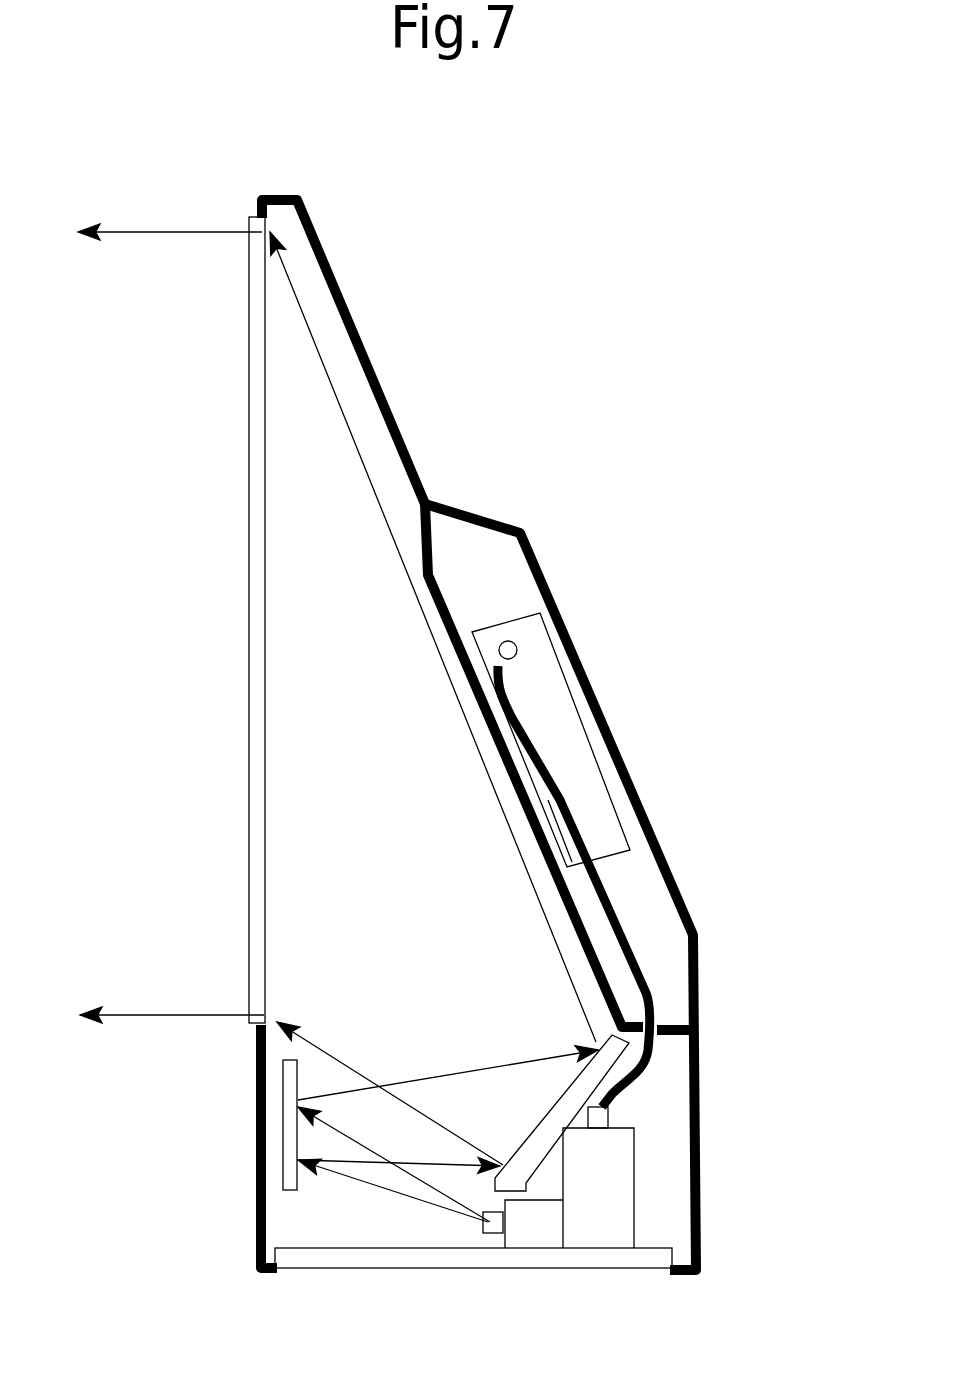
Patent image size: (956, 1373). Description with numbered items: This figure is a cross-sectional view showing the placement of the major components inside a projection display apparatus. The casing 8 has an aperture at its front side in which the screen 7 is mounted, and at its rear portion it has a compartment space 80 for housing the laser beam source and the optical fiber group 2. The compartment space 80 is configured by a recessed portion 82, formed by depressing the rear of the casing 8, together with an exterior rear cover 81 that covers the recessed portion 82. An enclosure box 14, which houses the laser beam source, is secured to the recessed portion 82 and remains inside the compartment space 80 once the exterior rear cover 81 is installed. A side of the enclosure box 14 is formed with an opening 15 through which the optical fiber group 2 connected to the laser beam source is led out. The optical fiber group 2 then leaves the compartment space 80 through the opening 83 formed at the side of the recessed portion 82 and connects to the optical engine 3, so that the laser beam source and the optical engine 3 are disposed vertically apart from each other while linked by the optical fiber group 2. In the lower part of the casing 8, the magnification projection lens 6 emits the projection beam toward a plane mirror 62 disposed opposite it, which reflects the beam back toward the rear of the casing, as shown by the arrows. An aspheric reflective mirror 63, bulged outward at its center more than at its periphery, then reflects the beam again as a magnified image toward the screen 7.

The optical fiber group 2 is at (618, 932).
The optical engine 3 is at (608, 1172).
The magnification projection lens 6 is at (498, 1230).
The screen 7 is at (258, 872).
The casing 8 is at (354, 331).
The enclosure box 14 is at (543, 737).
The opening 15 is at (515, 642).
The plane mirror 62 is at (290, 1135).
The aspheric reflective mirror 63 is at (523, 1150).
The compartment space 80 is at (473, 578).
The exterior rear cover 81 is at (543, 580).
The recessed portion 82 is at (432, 535).
The opening 83 is at (663, 1023).